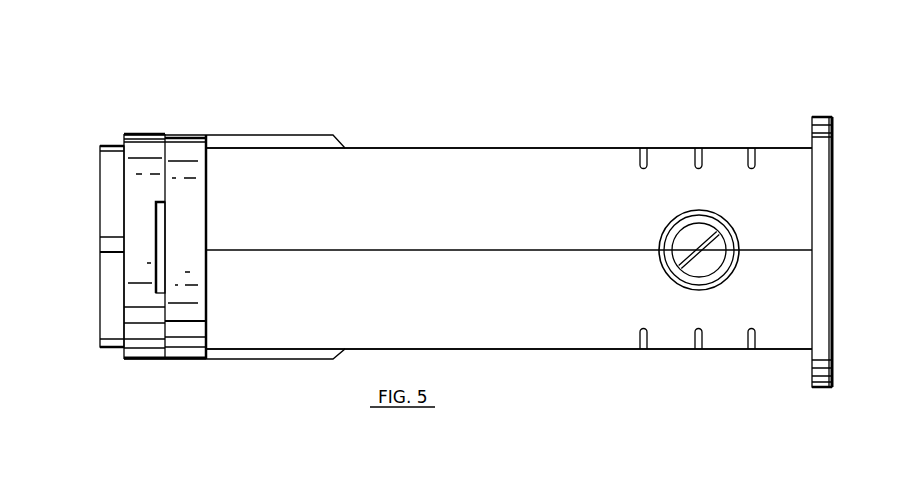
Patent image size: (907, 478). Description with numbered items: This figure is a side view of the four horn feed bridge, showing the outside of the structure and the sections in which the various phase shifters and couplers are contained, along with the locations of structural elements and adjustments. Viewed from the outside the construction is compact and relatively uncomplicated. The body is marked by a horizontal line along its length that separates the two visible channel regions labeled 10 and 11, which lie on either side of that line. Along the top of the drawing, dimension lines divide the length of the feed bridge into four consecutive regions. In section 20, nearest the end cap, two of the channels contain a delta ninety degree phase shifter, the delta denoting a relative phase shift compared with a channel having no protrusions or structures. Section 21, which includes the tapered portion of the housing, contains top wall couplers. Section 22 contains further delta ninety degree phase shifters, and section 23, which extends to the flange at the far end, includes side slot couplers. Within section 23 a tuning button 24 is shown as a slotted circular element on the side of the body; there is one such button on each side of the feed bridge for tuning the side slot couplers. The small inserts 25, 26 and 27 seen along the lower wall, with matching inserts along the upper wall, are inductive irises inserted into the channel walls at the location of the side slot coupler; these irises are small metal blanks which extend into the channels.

The upper body half 10 is at (509, 199).
The lower body half 11 is at (509, 315).
The section 20 is at (144, 28).
The section 21 is at (432, 148).
The section 22 is at (547, 148).
The section 23 is at (782, 148).
The tuning button 24 is at (712, 255).
The inductive iris 25 is at (638, 353).
The inductive iris 26 is at (698, 353).
The inductive iris 27 is at (750, 353).